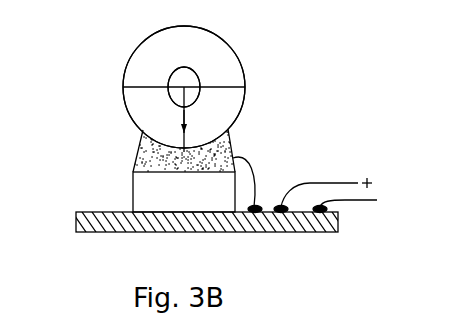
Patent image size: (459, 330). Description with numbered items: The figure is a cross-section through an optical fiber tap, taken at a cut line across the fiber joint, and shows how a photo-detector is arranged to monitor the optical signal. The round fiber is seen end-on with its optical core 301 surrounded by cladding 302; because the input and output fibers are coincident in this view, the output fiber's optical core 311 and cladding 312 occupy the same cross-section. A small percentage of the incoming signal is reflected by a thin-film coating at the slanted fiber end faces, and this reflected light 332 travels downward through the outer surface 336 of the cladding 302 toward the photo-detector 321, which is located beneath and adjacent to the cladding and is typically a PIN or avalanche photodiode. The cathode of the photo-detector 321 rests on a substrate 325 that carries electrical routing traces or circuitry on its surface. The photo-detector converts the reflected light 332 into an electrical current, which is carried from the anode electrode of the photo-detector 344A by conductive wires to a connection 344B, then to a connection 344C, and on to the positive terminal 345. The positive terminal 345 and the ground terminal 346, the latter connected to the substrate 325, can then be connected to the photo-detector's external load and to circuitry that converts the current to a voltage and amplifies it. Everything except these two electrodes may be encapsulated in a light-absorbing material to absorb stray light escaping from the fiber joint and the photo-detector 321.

The cladding 312 is at (128, 58).
The cladding 302 is at (123, 104).
The optical core 311 is at (193, 70).
The optical core 301 is at (199, 98).
The reflected light 332 is at (178, 122).
The outer surface of the cladding 336 is at (152, 127).
The photo-detector 321 is at (132, 193).
The substrate 325 is at (263, 233).
The anode electrode of the photo-detector 344A is at (229, 168).
The wire bond connection 344B is at (256, 205).
The wire bond connection 344C is at (283, 205).
The positive terminal 345 is at (334, 184).
The ground terminal 346 is at (393, 213).